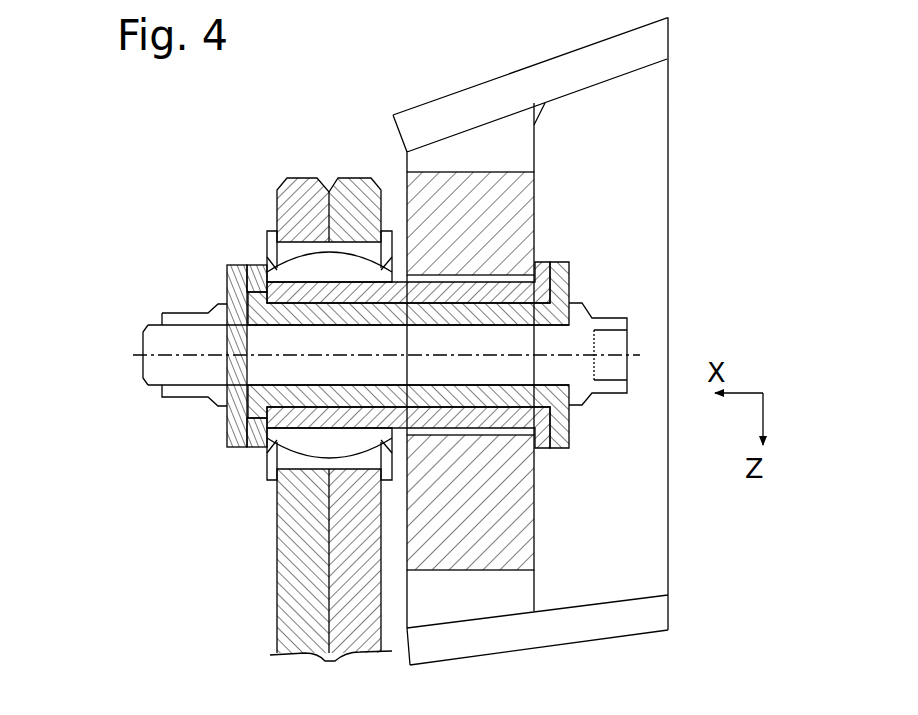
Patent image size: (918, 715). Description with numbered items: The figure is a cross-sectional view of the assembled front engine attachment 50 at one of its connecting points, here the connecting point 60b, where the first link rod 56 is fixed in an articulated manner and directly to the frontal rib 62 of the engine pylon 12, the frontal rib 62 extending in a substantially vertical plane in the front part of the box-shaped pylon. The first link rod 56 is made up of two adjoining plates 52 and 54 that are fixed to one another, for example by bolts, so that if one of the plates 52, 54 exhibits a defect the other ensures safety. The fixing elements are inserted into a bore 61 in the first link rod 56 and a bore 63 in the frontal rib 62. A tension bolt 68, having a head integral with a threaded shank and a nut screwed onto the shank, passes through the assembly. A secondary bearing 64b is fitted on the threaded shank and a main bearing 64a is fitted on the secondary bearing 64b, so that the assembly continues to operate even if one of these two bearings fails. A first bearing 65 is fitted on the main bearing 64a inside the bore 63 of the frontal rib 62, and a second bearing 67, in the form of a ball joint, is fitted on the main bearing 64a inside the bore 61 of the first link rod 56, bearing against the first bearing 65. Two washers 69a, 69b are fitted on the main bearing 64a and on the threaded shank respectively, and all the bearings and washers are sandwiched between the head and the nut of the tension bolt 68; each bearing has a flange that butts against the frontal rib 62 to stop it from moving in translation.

The engine pylon 12 is at (653, 48).
The front engine attachment 50 is at (712, 150).
The plate 52 is at (301, 193).
The plate 54 is at (348, 192).
The first link rod 56 is at (277, 190).
The connecting point 60b is at (143, 355).
The bore 61 is at (278, 490).
The frontal rib 62 is at (505, 138).
The bore 63 is at (470, 437).
The main bearing 64a is at (542, 262).
The secondary bearing 64b is at (567, 292).
The first bearing 65 is at (400, 265).
The second bearing 67 is at (278, 453).
The tension bolt 68 is at (172, 370).
The washer 69a is at (258, 278).
The washer 69b is at (227, 290).